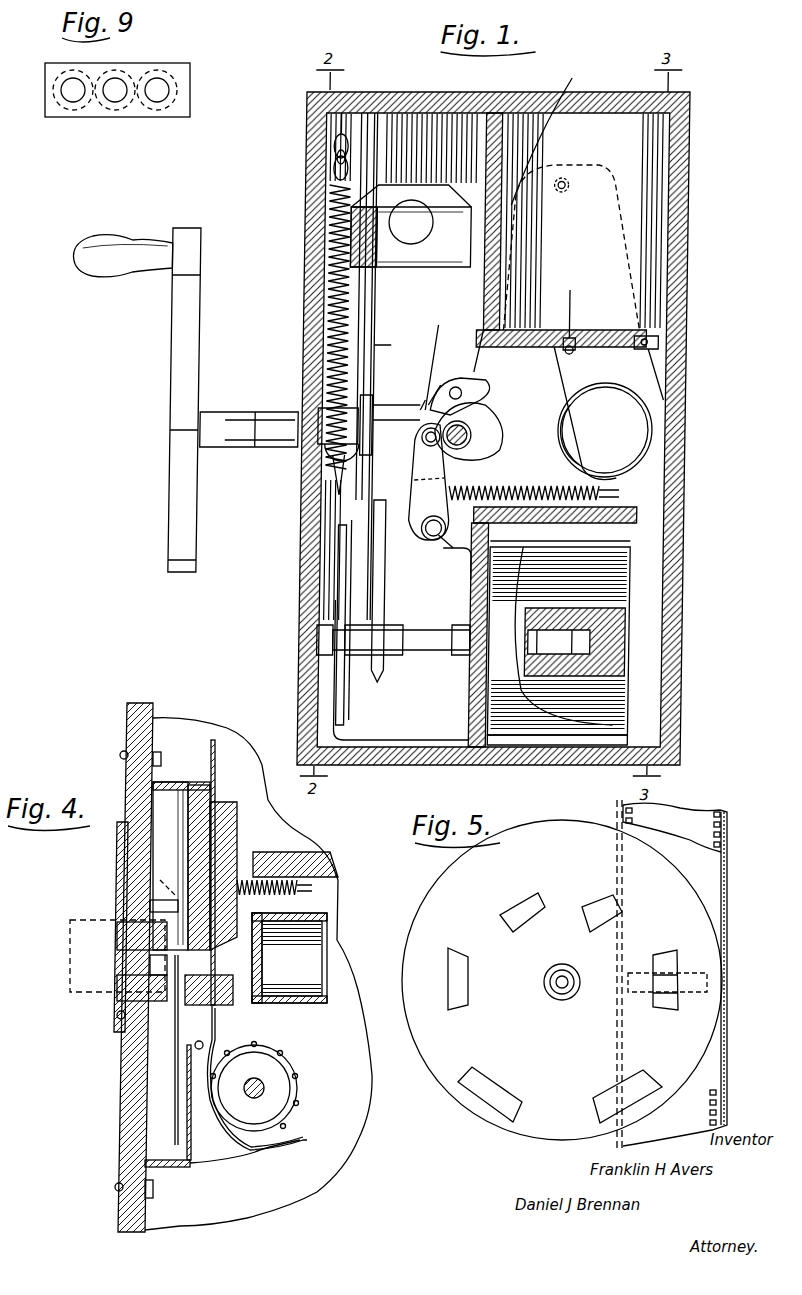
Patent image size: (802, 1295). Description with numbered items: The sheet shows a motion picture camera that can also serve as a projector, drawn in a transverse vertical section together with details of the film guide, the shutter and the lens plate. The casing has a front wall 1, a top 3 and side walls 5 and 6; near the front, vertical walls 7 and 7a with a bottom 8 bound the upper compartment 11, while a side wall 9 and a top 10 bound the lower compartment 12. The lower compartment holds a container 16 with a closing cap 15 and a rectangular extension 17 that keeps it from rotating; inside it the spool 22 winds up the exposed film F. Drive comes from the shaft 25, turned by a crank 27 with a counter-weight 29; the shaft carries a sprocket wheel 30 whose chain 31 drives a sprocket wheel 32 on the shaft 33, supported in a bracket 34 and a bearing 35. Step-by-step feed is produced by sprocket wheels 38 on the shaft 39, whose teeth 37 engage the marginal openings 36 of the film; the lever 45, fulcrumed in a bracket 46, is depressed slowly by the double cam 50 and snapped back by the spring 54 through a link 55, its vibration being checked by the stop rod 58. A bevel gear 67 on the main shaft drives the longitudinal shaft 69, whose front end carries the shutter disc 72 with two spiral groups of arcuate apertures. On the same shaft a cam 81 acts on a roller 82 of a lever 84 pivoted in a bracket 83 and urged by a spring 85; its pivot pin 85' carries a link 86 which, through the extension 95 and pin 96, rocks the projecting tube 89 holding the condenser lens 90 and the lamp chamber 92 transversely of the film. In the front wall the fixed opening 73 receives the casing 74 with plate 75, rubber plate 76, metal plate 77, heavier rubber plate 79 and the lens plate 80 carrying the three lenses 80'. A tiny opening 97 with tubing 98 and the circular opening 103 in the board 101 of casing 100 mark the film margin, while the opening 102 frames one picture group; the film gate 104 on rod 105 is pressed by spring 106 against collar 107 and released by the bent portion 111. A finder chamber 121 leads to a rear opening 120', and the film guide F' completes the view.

In FIG. 4, the front wall 1 is at (120, 1128).
In FIG. 1, the top 3 is at (608, 83).
In FIG. 1, the side wall 5 is at (688, 210).
In FIG. 1, the side wall 6 is at (307, 244).
In FIG. 1, the vertical wall 7 is at (492, 112).
In FIG. 1, the vertical wall 7a is at (546, 126).
In FIG. 1, the bottom 8 is at (655, 338).
In FIG. 4, the bottom 8 is at (338, 864).
In FIG. 1, the side wall 9 is at (478, 716).
In FIG. 1, the top 10 is at (650, 522).
In FIG. 1, the upper compartment 11 is at (600, 175).
In FIG. 1, the lower compartment 12 is at (558, 634).
In FIG. 1, the closing cap 15 is at (630, 708).
In FIG. 1, the container 16 is at (620, 545).
In FIG. 1, the rectangular extension 17 is at (580, 740).
In FIG. 1, the spool 22 is at (635, 620).
In FIG. 1, the shaft 25 is at (400, 420).
In FIG. 1, the crank 27 is at (175, 370).
In FIG. 1, the counter-weight 29 is at (175, 555).
In FIG. 1, the sprocket wheel 30 is at (385, 400).
In FIG. 1, the chain 31 is at (380, 600).
In FIG. 1, the sprocket wheel 32 is at (325, 660).
In FIG. 1, the shaft 33 is at (446, 652).
In FIG. 1, the bracket 34 is at (305, 695).
In FIG. 1, the bearing 35 is at (468, 632).
In FIG. 5, the openings 36 is at (622, 812).
In FIG. 4, the teeth 37 is at (299, 1097).
In FIG. 4, the film feeding sprocket wheels 38 is at (266, 1087).
In FIG. 4, the shaft 39 is at (261, 1080).
In FIG. 1, the lever 45 is at (358, 570).
In FIG. 1, the bracket 46 is at (345, 548).
In FIG. 1, the cam 50 is at (393, 340).
In FIG. 1, the spring 54 is at (332, 300).
In FIG. 1, the link 55 is at (345, 480).
In FIG. 1, the stop rod 58 is at (336, 178).
In FIG. 1, the bevel gear 67 is at (455, 380).
In FIG. 1, the shaft 69 is at (470, 432).
In FIG. 5, the shaft 69 is at (556, 990).
In FIG. 4, the circular disc 72 is at (178, 1085).
In FIG. 5, the circular disc 72 is at (400, 943).
In FIG. 4, the fixed opening 73 is at (118, 1030).
In FIG. 4, the casing 74 is at (118, 1010).
In FIG. 4, the plate 75 is at (118, 1055).
In FIG. 4, the rubber plate 76 is at (115, 1002).
In FIG. 4, the metal plate 77 is at (118, 934).
In FIG. 4, the rubber plate 79 is at (120, 945).
In FIG. 9, the plate 80 is at (117, 106).
In FIG. 4, the plate 80 is at (103, 988).
In FIG. 9, the lenses 80' is at (115, 73).
In FIG. 4, the lenses 80' is at (164, 1050).
In FIG. 1, the cam 81 is at (498, 430).
In FIG. 1, the roller 82 is at (429, 481).
In FIG. 1, the bracket 83 is at (468, 560).
In FIG. 1, the lever 84 is at (448, 480).
In FIG. 1, the spring 85 is at (429, 498).
In FIG. 1, the pivot pin 85' is at (422, 546).
In FIG. 1, the link 86 is at (466, 378).
In FIG. 1, the projecting tube 89 is at (660, 405).
In FIG. 4, the projecting tube 89 is at (318, 916).
In FIG. 1, the condenser lens 90 is at (660, 432).
In FIG. 1, the lamp chamber 92 is at (668, 395).
In FIG. 1, the extension 95 is at (445, 326).
In FIG. 1, the pin 96 is at (580, 338).
In FIG. 4, the opening 97 is at (165, 895).
In FIG. 4, the tubing 98 is at (160, 905).
In FIG. 4, the casing 100 is at (200, 1170).
In FIG. 5, the casing 100 is at (728, 912).
In FIG. 4, the board 101 is at (200, 785).
In FIG. 4, the opening 102 is at (215, 968).
In FIG. 5, the opening 102 is at (665, 980).
In FIG. 4, the circular opening 103 is at (118, 832).
In FIG. 4, the film gate 104 is at (240, 815).
In FIG. 1, the rod 105 is at (575, 286).
In FIG. 4, the rod 105 is at (312, 888).
In FIG. 4, the spring 106 is at (295, 890).
In FIG. 1, the collar 107 is at (580, 240).
In FIG. 1, the bent portion 111 is at (660, 352).
In FIG. 1, the opening 120' is at (411, 242).
In FIG. 1, the chamber 121 is at (399, 300).
In FIG. 4, the film F is at (238, 1106).
In FIG. 4, the film guide F' is at (238, 859).
In FIG. 5, the film guide F' is at (734, 798).